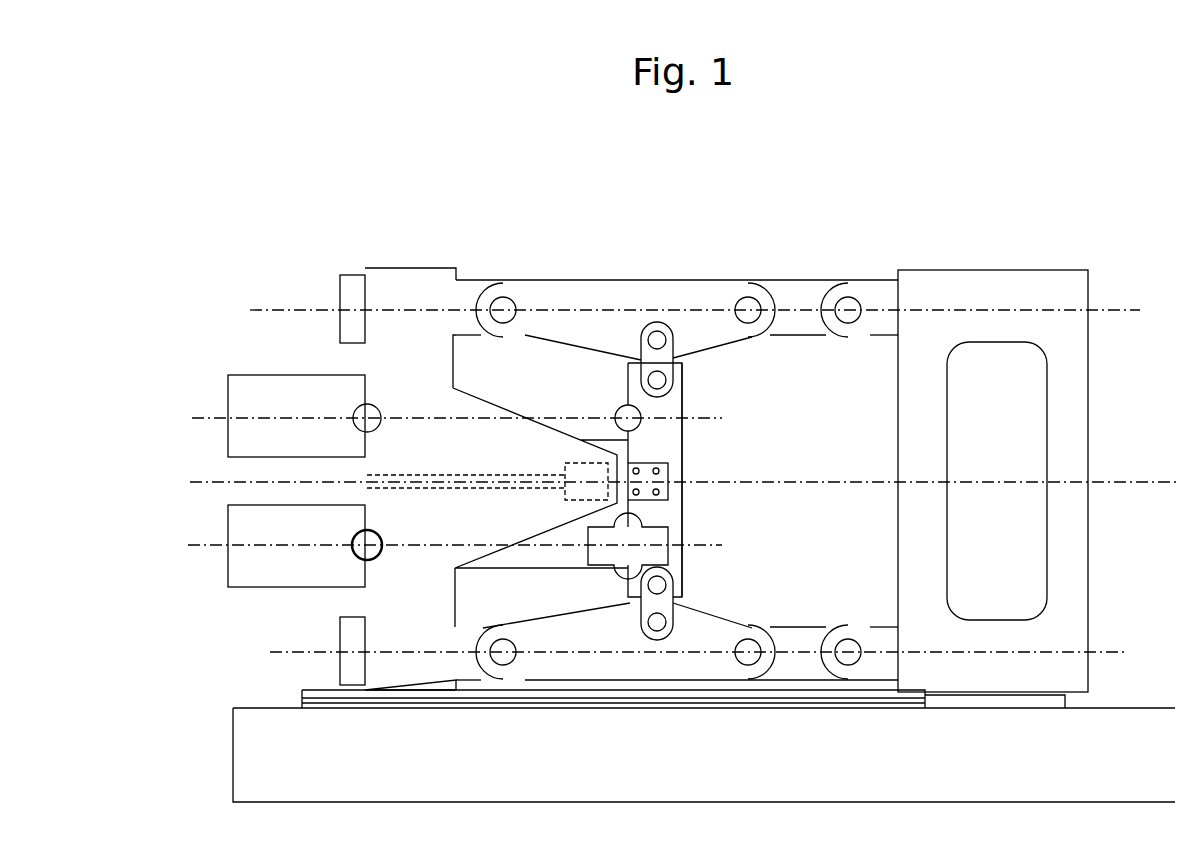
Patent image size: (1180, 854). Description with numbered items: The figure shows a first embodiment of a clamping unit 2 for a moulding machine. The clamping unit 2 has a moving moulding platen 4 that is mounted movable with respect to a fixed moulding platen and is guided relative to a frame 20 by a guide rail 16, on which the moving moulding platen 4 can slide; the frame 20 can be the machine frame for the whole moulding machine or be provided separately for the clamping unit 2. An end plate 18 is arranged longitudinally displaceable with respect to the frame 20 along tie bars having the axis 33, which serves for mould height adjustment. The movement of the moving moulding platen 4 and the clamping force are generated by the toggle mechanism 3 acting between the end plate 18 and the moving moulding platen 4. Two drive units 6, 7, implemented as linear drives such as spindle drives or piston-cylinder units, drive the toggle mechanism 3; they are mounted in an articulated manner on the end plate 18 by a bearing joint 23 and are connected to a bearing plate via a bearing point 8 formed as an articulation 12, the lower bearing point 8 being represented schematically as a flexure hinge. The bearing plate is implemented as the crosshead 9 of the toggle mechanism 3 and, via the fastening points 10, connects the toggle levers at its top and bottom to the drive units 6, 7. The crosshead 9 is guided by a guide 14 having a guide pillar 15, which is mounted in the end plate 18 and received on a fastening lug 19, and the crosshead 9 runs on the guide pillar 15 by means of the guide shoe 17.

The clamping unit 2 is at (205, 181).
The toggle mechanism 3 is at (757, 224).
The moving moulding platen 4 is at (985, 290).
The first drive unit 6 is at (290, 405).
The second drive unit 7 is at (290, 560).
The bearing point 8 is at (622, 407).
The crosshead 9 is at (660, 445).
The fastening points 10 is at (657, 378).
The articulation 12 is at (640, 545).
The guide 14 is at (510, 512).
The guide pillar 15 is at (472, 478).
The guide rail 16 is at (312, 697).
The guide shoe 17 is at (605, 482).
The end plate 18 is at (405, 285).
The fastening lug 19 is at (530, 455).
The frame 20 is at (290, 765).
The bearing joint 23 is at (352, 535).
The axis 33 is at (1113, 308).